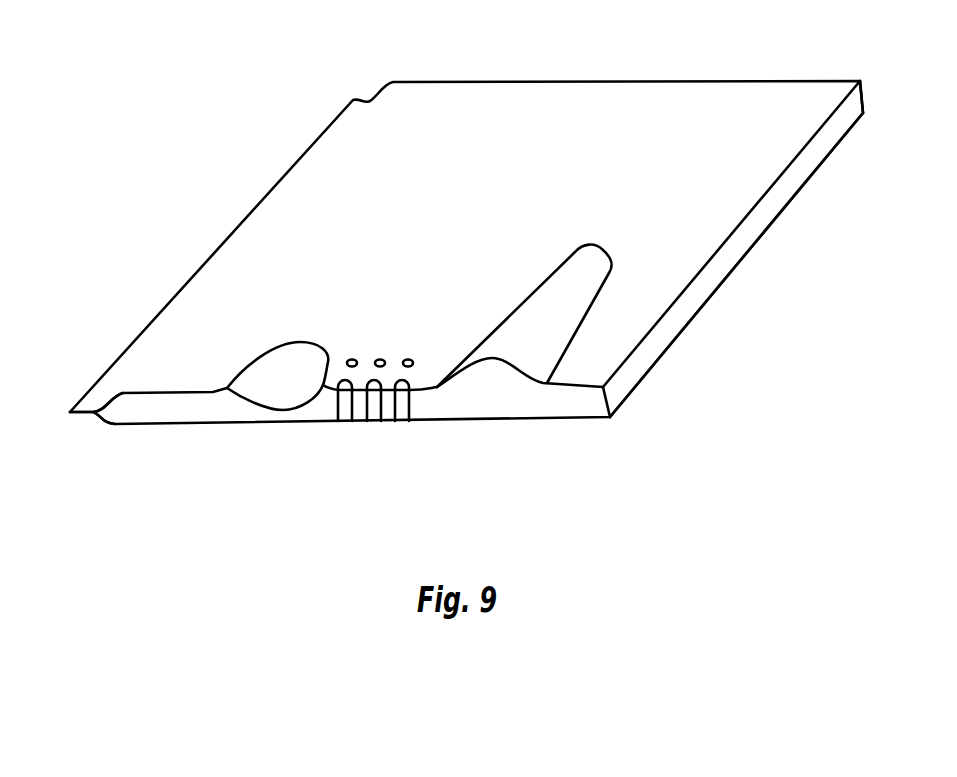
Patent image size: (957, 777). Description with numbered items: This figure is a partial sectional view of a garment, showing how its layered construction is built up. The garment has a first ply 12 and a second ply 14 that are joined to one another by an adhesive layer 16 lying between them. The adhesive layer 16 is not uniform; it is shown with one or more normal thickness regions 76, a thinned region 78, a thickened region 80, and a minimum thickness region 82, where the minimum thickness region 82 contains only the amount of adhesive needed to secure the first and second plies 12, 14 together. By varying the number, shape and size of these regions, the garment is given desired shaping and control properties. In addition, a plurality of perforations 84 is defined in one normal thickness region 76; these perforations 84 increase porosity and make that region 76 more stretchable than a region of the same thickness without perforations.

The first ply 12 is at (752, 113).
The second ply 14 is at (772, 223).
The adhesive layer 16 is at (847, 107).
The normal thickness region 76 is at (362, 407).
The thinned region 78 is at (267, 410).
The thickened region 80 is at (500, 402).
The minimum thickness region 82 is at (73, 415).
The perforations 84 is at (385, 428).